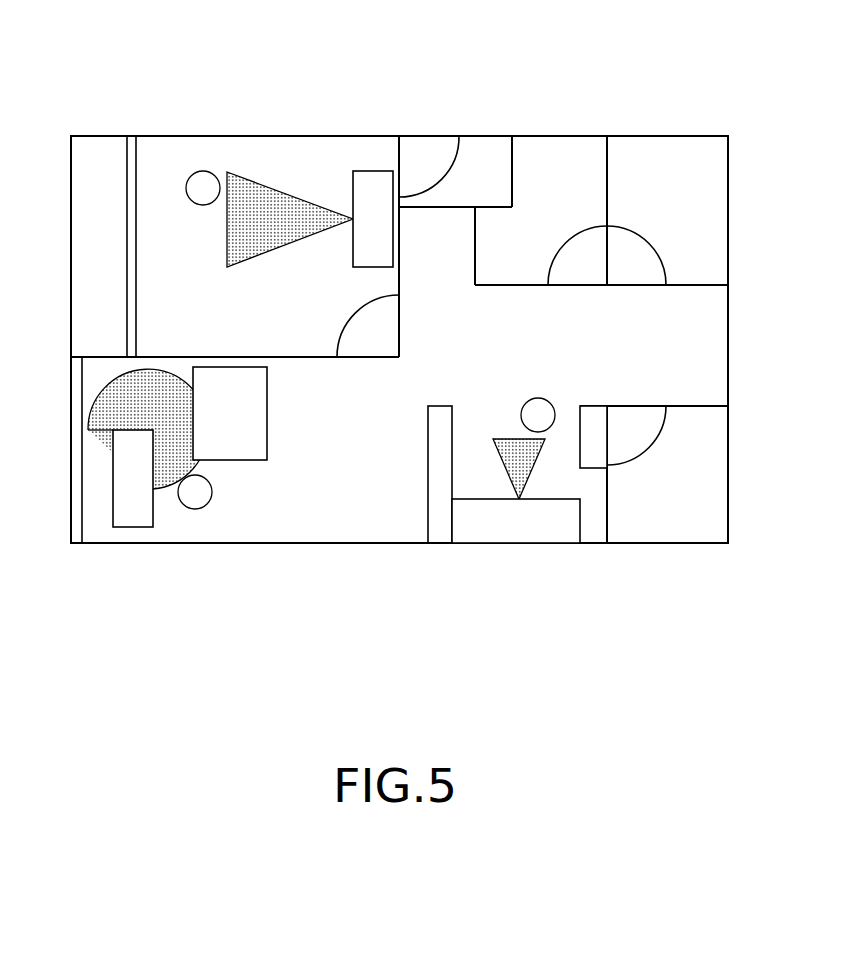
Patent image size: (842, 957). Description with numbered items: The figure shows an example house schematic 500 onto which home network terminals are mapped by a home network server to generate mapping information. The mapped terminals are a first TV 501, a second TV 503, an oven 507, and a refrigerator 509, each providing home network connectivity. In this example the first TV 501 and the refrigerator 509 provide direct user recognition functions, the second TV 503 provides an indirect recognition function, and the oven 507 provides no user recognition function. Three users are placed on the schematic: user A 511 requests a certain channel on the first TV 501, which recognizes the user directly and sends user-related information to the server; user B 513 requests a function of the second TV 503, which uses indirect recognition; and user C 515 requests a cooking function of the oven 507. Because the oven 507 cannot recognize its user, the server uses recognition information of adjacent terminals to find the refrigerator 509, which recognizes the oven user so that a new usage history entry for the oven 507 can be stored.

The house schematic 500 is at (650, 90).
The first TV 501 is at (371, 171).
The second TV 503 is at (132, 527).
The oven 507 is at (590, 405).
The refrigerator 509 is at (520, 535).
The user A 511 is at (203, 171).
The user B 513 is at (212, 490).
The user C 515 is at (535, 398).